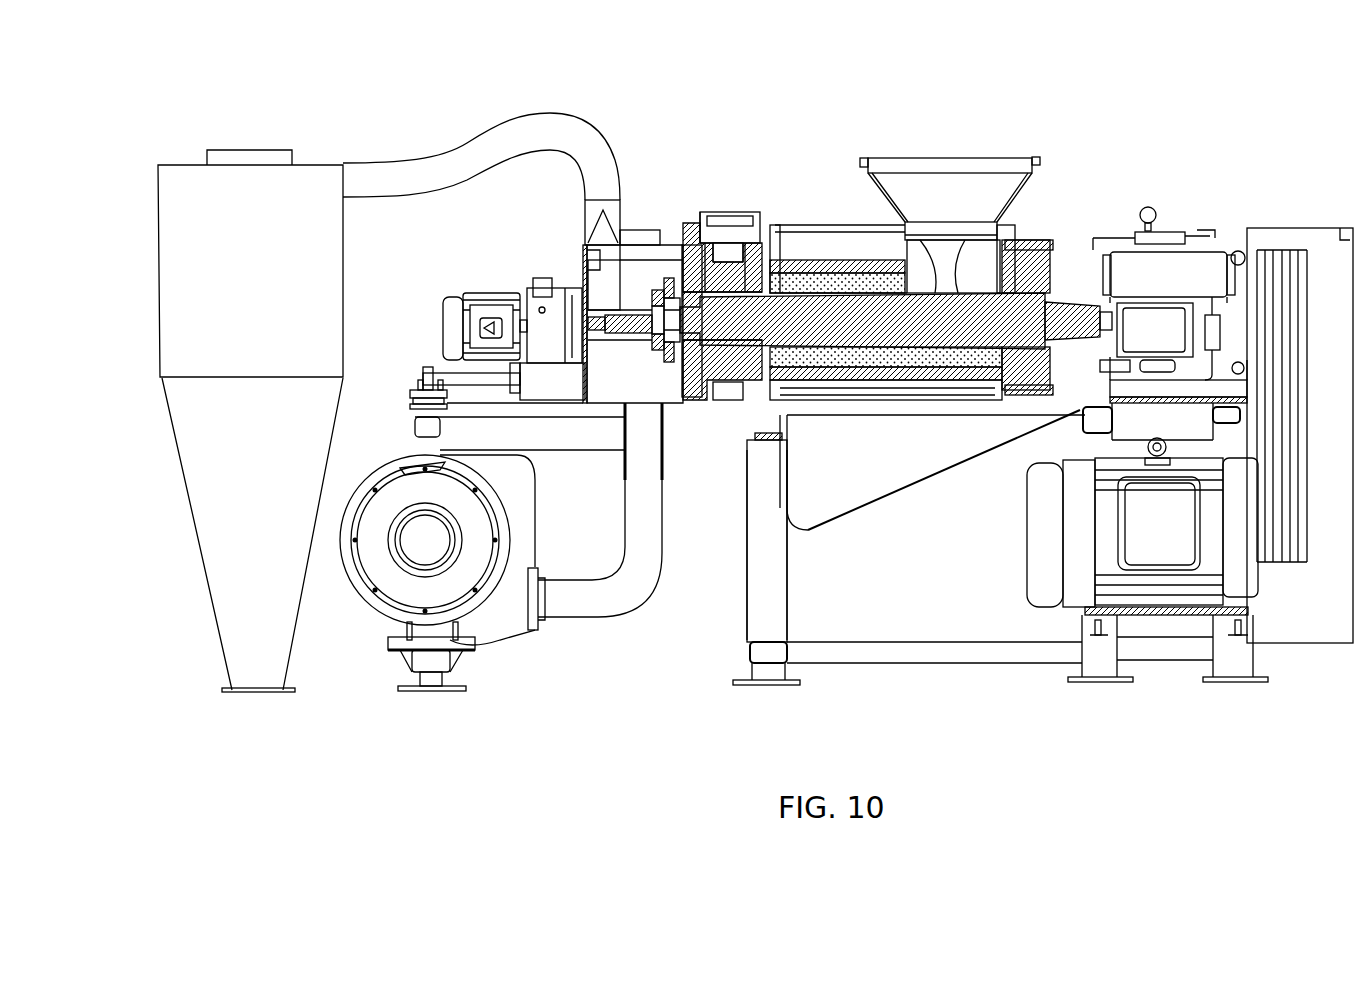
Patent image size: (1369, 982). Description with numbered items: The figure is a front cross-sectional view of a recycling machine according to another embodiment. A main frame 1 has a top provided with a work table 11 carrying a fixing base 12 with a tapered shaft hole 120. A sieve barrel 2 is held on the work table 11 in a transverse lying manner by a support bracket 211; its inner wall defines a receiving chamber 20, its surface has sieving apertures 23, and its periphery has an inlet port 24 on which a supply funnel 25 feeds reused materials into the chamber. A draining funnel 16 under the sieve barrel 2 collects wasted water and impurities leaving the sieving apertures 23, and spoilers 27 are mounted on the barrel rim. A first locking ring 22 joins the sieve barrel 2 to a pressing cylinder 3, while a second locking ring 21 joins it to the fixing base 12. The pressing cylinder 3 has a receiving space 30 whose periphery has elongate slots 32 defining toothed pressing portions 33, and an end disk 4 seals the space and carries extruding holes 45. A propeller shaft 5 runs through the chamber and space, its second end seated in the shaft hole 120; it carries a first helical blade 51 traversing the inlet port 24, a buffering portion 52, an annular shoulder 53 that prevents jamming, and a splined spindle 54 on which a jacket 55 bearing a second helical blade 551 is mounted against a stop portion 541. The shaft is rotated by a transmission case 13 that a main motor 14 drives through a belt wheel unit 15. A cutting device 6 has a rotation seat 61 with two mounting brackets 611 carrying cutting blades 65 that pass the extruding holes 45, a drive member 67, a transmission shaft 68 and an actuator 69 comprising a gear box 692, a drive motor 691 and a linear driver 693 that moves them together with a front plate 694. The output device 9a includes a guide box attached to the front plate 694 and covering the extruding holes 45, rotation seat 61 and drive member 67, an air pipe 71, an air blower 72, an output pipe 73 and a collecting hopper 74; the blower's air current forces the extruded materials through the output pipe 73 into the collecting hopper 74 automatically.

The main frame 1 is at (848, 682).
The sieve barrel 2 is at (823, 245).
The pressing cylinder 3 is at (733, 405).
The end disk 4 is at (708, 405).
The propeller shaft 5 is at (945, 395).
The cutting device 6 is at (662, 355).
The output device 9a is at (630, 215).
The work table 11 is at (410, 405).
The fixing base 12 is at (1057, 245).
The transmission case 13 is at (1182, 265).
The main motor 14 is at (1165, 615).
The belt wheel unit 15 is at (1300, 268).
The draining funnel 16 is at (905, 490).
The receiving chamber 20 is at (795, 262).
The second locking ring 21 is at (1010, 400).
The first locking ring 22 is at (790, 280).
The sieving apertures 23 is at (850, 265).
The inlet port 24 is at (920, 250).
The supply funnel 25 is at (990, 158).
The spoilers 27 is at (805, 520).
The receiving space 30 is at (700, 405).
The elongate slots 32 is at (716, 245).
The toothed pressing portions 33 is at (705, 255).
The extruding holes 45 is at (690, 232).
The first helical blade 51 is at (955, 250).
The buffering portion 52 is at (850, 410).
The annular shoulder 53 is at (1018, 250).
The splined spindle 54 is at (750, 430).
The jacket 55 is at (728, 262).
The rotation seat 61 is at (688, 405).
The cutting blades 65 is at (665, 245).
The drive member 67 is at (652, 350).
The transmission shaft 68 is at (652, 335).
The actuator 69 is at (440, 292).
The air pipe 71 is at (650, 580).
The air blower 72 is at (505, 620).
The output pipe 73 is at (552, 113).
The collecting hopper 74 is at (323, 165).
The tapered shaft hole 120 is at (1092, 300).
The support bracket 211 is at (925, 395).
The stop portion 541 is at (750, 262).
The second helical blade 551 is at (738, 245).
The mounting brackets 611 is at (670, 290).
The drive motor 691 is at (470, 292).
The gear box 692 is at (543, 280).
The linear driver 693 is at (430, 375).
The front plate 694 is at (585, 300).